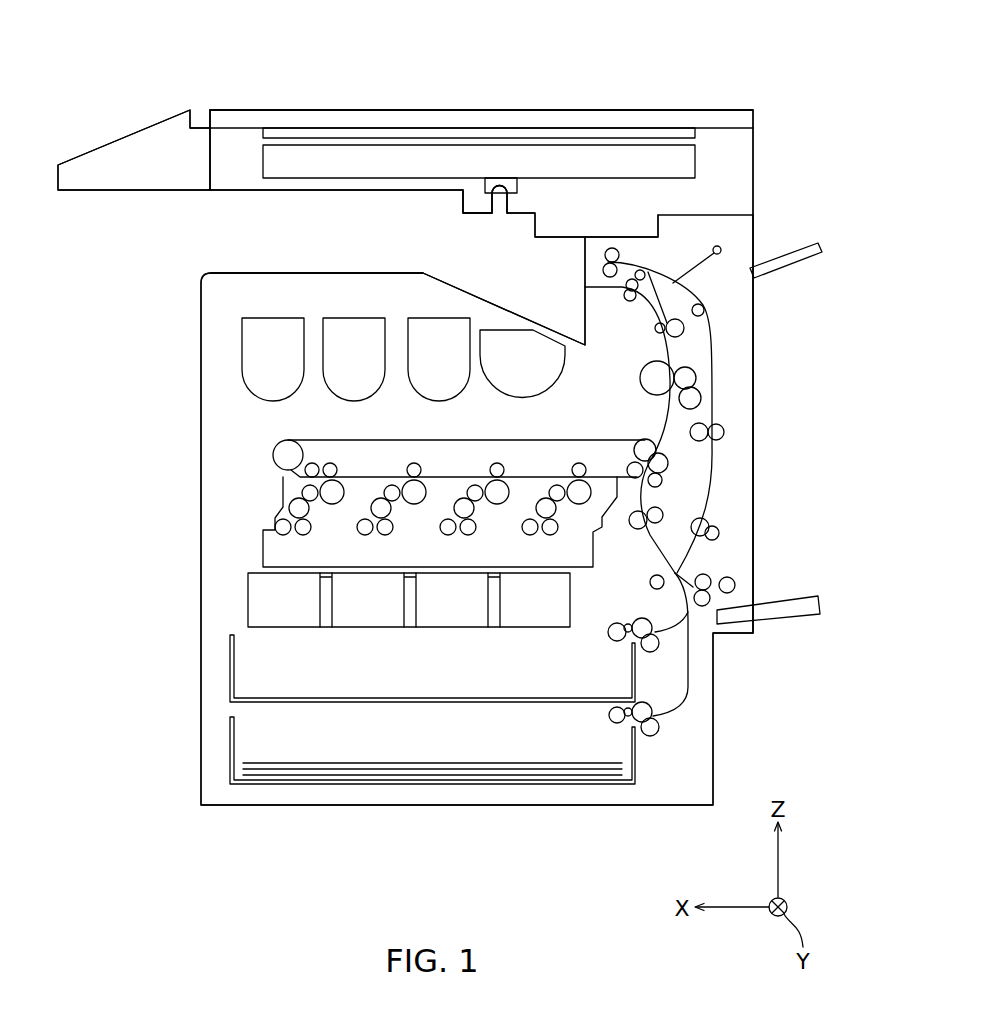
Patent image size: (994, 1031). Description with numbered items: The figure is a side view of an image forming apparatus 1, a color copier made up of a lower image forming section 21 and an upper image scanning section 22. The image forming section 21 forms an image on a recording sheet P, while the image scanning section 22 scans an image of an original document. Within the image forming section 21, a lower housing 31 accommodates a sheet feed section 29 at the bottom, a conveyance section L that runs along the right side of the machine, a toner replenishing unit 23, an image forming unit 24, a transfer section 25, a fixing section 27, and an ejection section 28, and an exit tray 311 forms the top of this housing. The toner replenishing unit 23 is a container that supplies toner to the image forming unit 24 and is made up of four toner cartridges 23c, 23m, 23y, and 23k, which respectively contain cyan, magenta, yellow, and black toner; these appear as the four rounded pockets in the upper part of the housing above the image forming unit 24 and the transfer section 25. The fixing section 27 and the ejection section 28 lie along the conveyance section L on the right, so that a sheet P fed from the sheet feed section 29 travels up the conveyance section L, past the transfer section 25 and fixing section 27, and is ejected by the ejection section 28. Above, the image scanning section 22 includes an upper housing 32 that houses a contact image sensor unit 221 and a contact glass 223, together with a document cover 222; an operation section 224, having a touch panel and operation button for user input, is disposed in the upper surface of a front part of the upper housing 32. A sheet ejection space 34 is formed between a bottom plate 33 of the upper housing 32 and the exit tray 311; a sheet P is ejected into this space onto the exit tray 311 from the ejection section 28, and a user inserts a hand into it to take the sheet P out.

The image forming apparatus 1 is at (717, 73).
The image forming section 21 is at (758, 405).
The image scanning section 22 is at (758, 190).
The contact image sensor (CIS) unit 221 is at (690, 165).
The document cover 222 is at (407, 117).
The contact glass 223 is at (289, 132).
The operation section 224 is at (138, 127).
The toner replenishing unit 23 is at (348, 362).
The toner cartridge 23c is at (267, 318).
The toner cartridge 23m is at (349, 318).
The toner cartridge 23y is at (430, 318).
The toner cartridge 23k is at (495, 330).
The image forming unit 24 is at (232, 550).
The transfer section 25 is at (262, 449).
The fixing section 27 is at (640, 358).
The ejection section 28 is at (648, 272).
The sheet feed section 29 is at (218, 751).
The lower housing 31 is at (757, 506).
The exit tray 311 is at (290, 273).
The upper housing 32 is at (757, 142).
The bottom plate 33 is at (352, 192).
The sheet ejection space 34 is at (245, 213).
The conveyance section L is at (722, 469).
The recording sheet P is at (280, 776).